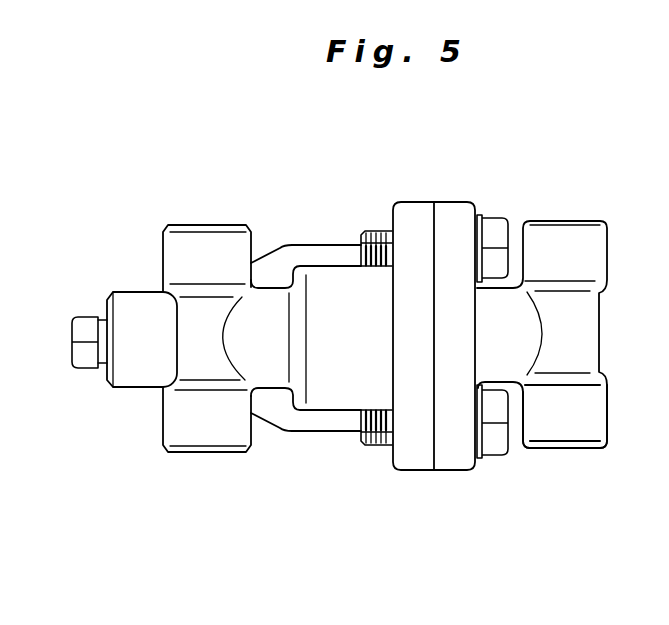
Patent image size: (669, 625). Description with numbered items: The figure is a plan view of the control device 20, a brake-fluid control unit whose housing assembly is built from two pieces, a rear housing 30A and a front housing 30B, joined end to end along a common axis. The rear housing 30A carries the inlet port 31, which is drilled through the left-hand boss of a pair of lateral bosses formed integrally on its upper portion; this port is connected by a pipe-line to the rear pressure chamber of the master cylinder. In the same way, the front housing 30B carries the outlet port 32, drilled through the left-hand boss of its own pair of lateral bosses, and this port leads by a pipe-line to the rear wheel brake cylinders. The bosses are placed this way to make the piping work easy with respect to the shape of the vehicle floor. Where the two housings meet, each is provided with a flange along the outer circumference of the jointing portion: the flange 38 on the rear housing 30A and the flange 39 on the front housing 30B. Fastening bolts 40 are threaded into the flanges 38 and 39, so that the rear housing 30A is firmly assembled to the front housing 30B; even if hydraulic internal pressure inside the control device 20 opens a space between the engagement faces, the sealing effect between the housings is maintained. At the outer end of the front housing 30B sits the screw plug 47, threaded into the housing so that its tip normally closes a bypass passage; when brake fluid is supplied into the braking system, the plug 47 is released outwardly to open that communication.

The control device 20 is at (328, 226).
The rear housing 30A is at (590, 336).
The front housing 30B is at (145, 380).
The inlet port 31 is at (553, 450).
The outlet port 32 is at (191, 453).
The flange 38 is at (452, 463).
The flange 39 is at (422, 463).
The fastening bolts 40 is at (493, 223).
The screw plug 47 is at (84, 325).